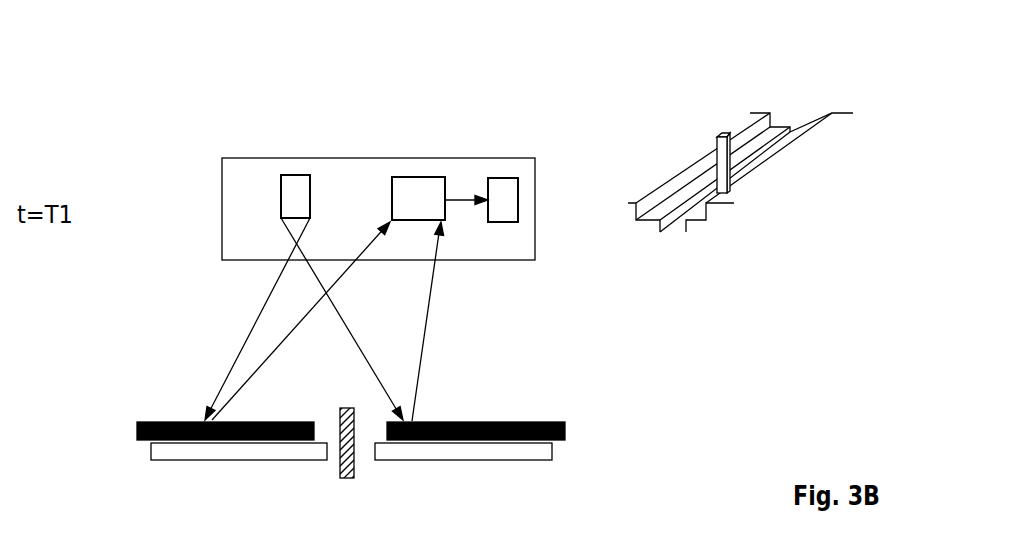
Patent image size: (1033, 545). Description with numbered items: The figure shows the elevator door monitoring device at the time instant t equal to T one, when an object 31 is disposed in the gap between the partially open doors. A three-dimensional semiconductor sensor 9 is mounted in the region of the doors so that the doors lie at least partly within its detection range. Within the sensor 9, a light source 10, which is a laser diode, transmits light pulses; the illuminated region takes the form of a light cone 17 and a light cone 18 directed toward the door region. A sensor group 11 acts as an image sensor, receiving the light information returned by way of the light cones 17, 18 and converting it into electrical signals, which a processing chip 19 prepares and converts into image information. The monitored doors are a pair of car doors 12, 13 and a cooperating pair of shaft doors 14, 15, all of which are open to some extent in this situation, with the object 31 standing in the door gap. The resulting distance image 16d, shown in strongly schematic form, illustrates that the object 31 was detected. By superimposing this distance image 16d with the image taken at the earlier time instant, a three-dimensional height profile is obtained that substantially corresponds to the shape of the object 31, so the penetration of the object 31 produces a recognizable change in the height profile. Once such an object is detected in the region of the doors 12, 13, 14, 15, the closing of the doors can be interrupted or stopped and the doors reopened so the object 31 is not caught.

The three-dimensional semiconductor sensor 9 is at (530, 188).
The light source 10 is at (292, 182).
The sensor group 11 is at (413, 183).
The processing chip 19 is at (498, 187).
The car door 12 is at (500, 420).
The car door 13 is at (170, 420).
The shaft door 14 is at (518, 460).
The shaft door 15 is at (213, 460).
The light cone 17 is at (292, 292).
The light cone 18 is at (395, 292).
The distance image 16d is at (719, 84).
The object 31 is at (354, 473).